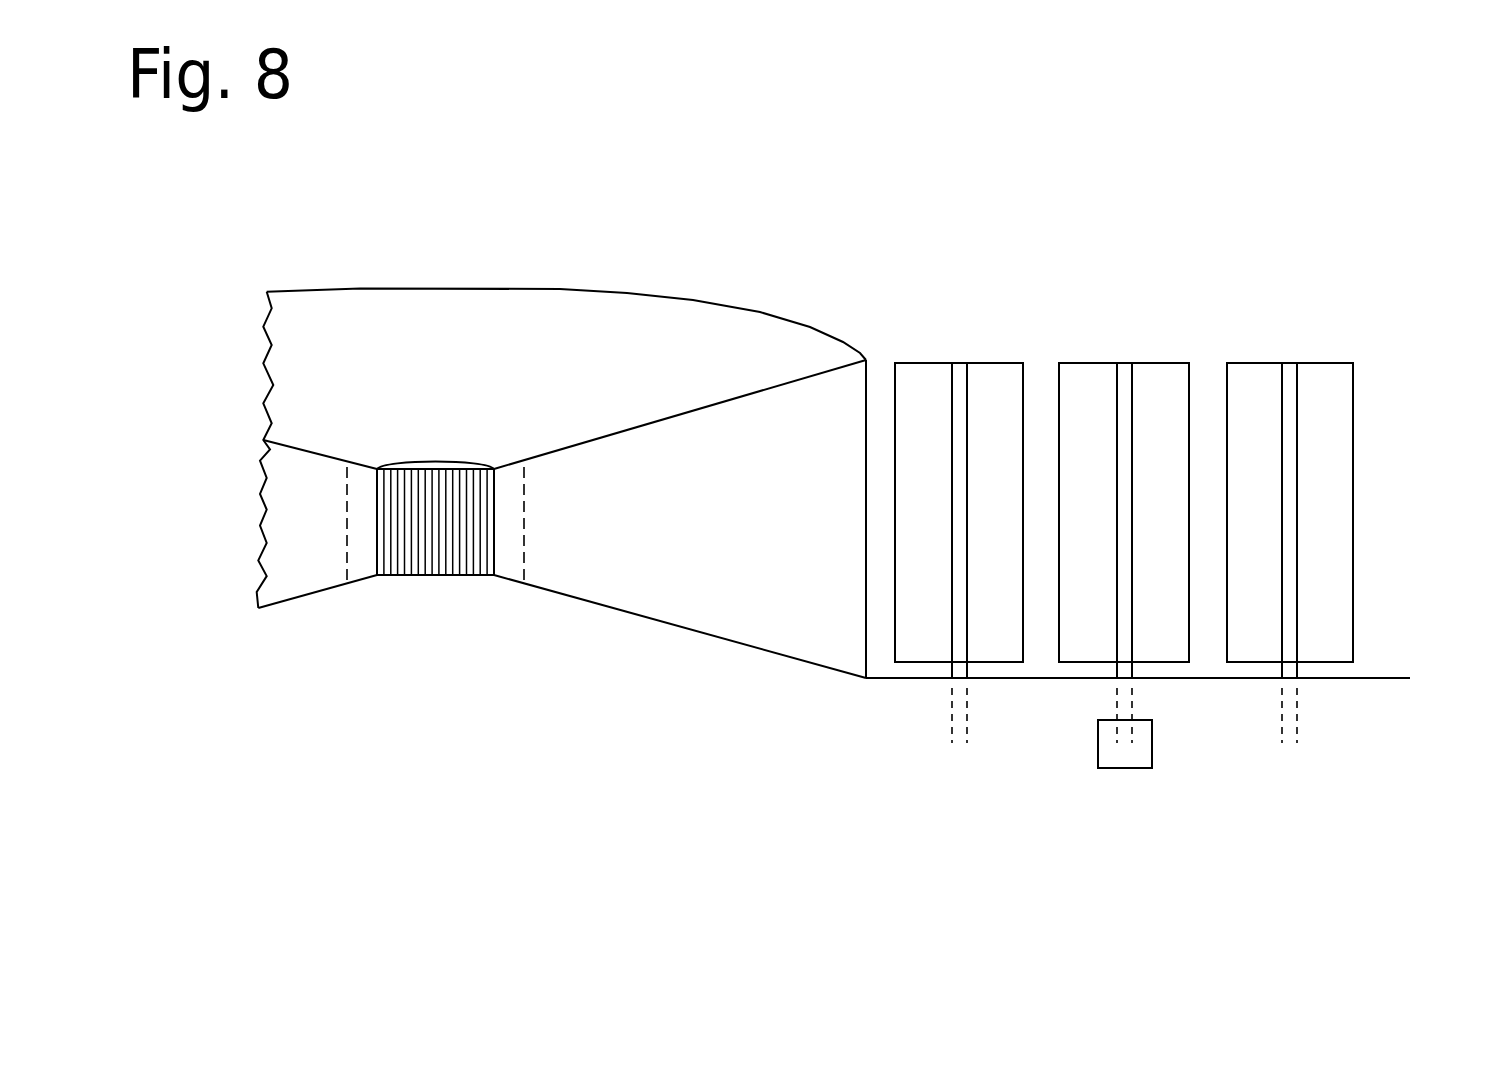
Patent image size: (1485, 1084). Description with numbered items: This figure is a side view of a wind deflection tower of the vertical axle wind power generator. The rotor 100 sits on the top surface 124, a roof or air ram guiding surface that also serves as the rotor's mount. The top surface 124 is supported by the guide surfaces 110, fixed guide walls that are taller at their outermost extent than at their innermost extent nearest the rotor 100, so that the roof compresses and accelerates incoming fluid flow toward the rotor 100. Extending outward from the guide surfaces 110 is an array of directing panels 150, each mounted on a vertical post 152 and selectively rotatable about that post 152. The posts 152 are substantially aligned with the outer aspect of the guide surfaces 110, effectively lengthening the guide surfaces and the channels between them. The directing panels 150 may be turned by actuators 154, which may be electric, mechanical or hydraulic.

The rotor 100 is at (427, 584).
The guide surface 110 is at (733, 533).
The top surface 124 is at (493, 392).
The directing panel 150 is at (1335, 465).
The vertical post 152 is at (1297, 672).
The actuator 154 is at (1098, 747).